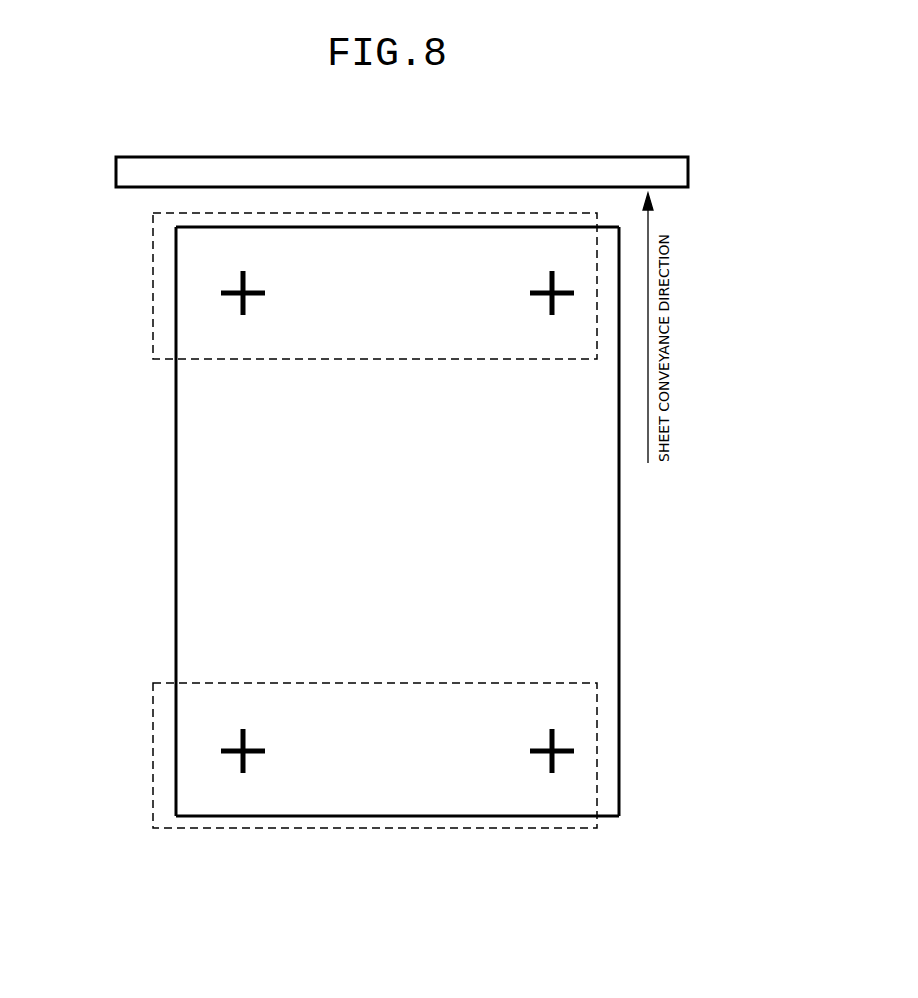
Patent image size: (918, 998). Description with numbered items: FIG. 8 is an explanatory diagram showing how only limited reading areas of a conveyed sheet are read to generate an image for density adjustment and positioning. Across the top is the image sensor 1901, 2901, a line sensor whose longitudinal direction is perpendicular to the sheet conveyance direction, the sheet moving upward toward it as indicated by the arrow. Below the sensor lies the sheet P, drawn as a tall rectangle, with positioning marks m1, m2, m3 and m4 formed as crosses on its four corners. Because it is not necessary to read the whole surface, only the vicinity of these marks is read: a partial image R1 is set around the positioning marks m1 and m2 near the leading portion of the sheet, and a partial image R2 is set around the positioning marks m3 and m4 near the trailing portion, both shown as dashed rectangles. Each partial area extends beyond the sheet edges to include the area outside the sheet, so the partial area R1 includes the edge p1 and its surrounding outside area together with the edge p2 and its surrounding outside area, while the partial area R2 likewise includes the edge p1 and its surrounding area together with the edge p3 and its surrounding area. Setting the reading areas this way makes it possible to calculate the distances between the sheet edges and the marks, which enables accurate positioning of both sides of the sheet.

The image sensor 1901 is at (454, 171).
The image sensor 2901 is at (688, 171).
The sheet P is at (385, 520).
The edge p1 is at (176, 487).
The edge p2 is at (410, 228).
The edge p3 is at (413, 818).
The partial image R1 is at (153, 283).
The partial image R2 is at (153, 764).
The positioning mark m1 is at (242, 270).
The positioning mark m2 is at (552, 270).
The positioning mark m3 is at (243, 773).
The positioning mark m4 is at (552, 773).